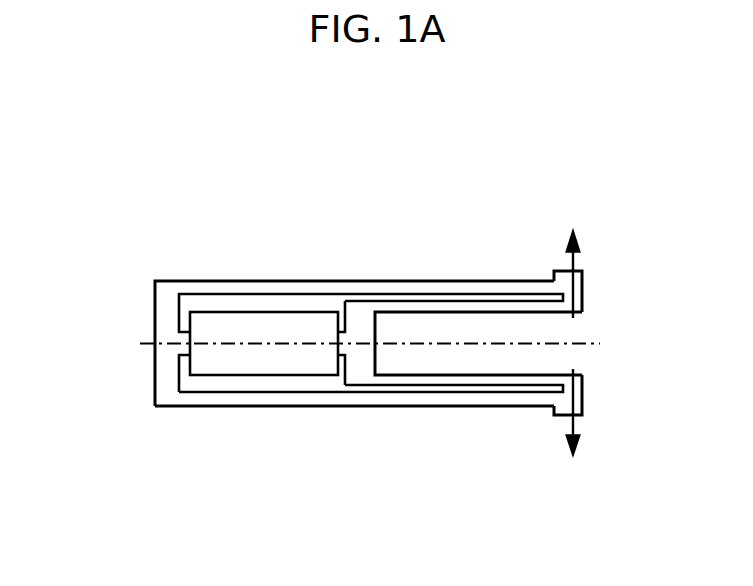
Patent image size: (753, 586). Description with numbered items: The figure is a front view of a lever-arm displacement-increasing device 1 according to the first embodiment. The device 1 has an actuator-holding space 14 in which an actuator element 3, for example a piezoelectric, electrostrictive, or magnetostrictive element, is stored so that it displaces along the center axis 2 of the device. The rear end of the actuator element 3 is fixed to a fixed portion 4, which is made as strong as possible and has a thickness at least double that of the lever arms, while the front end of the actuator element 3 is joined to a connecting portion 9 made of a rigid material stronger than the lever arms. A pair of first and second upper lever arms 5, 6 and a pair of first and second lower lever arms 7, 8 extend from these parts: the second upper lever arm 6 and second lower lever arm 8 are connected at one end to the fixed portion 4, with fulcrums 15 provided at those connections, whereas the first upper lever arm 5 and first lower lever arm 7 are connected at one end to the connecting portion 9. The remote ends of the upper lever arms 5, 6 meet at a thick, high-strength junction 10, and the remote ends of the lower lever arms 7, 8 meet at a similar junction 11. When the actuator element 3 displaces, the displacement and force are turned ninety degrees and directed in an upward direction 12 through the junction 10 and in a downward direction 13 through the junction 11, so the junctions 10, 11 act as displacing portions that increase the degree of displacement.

The lever-arm displacement-increasing device 1 is at (335, 437).
The center axis 2 is at (136, 345).
The actuator element 3 is at (250, 325).
The fixed portion 4 is at (164, 323).
The first upper lever arm 5 is at (463, 308).
The second upper lever arm 6 is at (405, 293).
The first lower lever arm 7 is at (450, 382).
The second lower lever arm 8 is at (515, 402).
The connecting portion 9 is at (345, 343).
The junction 10 is at (580, 298).
The junction 11 is at (580, 393).
The upward direction 12 is at (575, 259).
The downward direction 13 is at (577, 428).
The actuator-holding space 14 is at (237, 387).
The fulcrums 15 is at (167, 293).